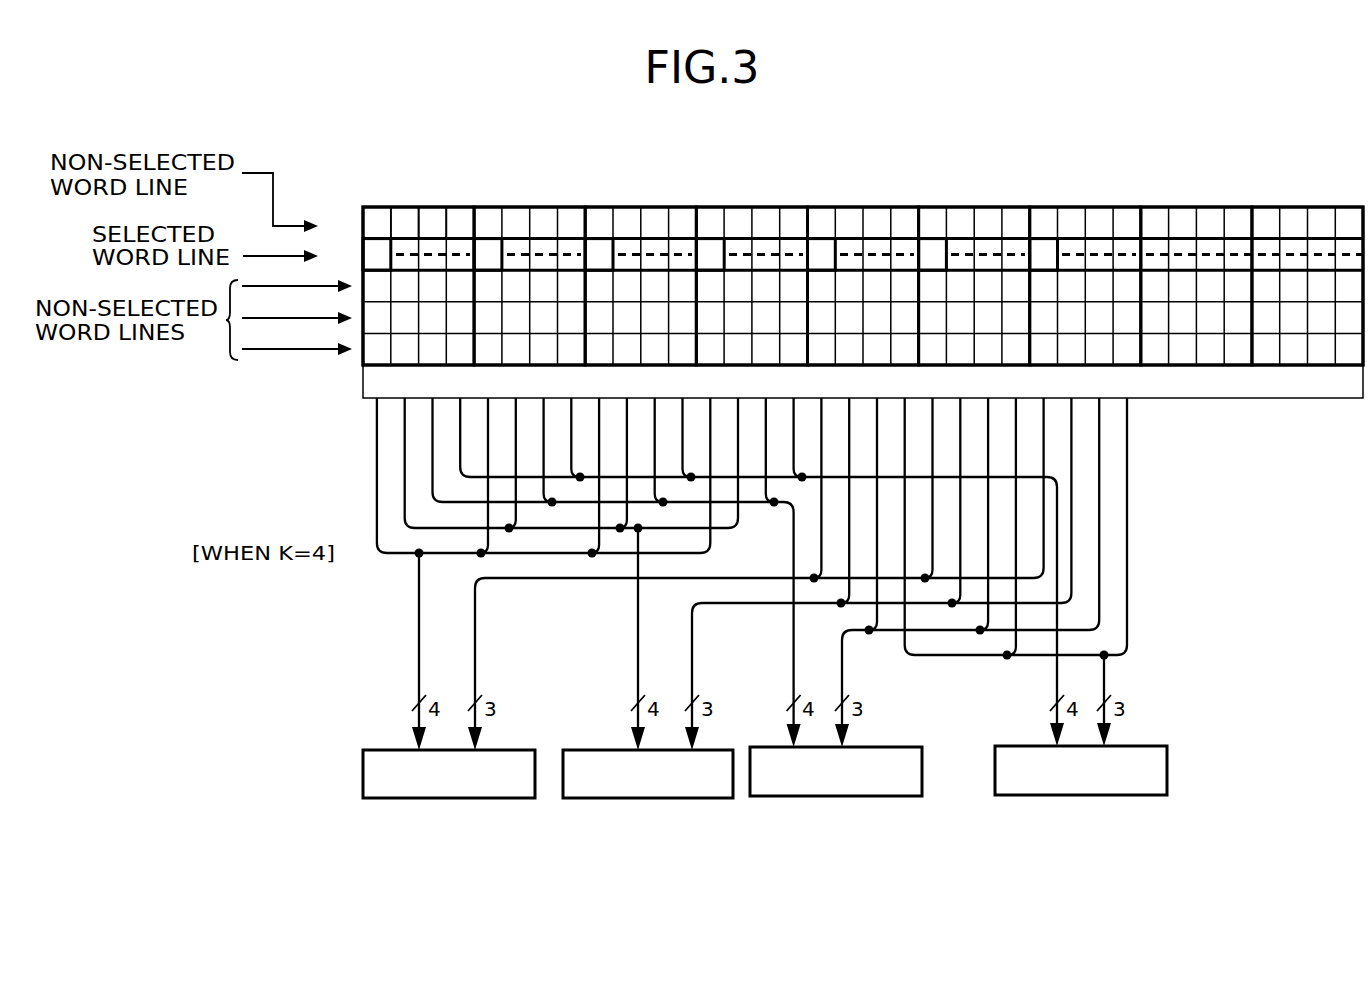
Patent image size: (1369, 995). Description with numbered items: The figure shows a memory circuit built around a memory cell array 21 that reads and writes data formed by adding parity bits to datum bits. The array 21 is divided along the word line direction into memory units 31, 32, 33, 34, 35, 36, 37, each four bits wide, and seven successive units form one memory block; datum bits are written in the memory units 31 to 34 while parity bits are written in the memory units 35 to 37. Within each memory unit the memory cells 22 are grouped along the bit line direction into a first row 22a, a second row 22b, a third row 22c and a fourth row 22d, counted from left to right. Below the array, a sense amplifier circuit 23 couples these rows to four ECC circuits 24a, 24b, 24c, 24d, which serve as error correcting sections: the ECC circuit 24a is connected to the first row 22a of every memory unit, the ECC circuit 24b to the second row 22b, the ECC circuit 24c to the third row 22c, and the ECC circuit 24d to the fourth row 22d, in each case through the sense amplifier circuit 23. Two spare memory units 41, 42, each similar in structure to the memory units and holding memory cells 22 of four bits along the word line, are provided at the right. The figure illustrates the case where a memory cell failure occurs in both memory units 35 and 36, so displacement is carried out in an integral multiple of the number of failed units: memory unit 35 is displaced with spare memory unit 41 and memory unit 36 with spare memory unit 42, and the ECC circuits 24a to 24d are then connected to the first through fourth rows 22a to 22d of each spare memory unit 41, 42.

The memory cell array 21 is at (938, 137).
The memory cell 22 is at (363, 259).
The first row 22a is at (377, 207).
The second row 22b is at (405, 207).
The third row 22c is at (434, 207).
The fourth row 22d is at (461, 207).
The sense amplifier circuit 23 is at (363, 385).
The ECC circuit 24a is at (449, 798).
The ECC circuit 24b is at (648, 798).
The ECC circuit 24c is at (836, 796).
The ECC circuit 24d is at (1081, 795).
The memory unit 31 is at (363, 211).
The memory unit 32 is at (548, 207).
The memory unit 33 is at (657, 207).
The memory unit 34 is at (767, 207).
The memory unit 35 is at (877, 207).
The memory unit 36 is at (988, 207).
The memory unit 37 is at (1099, 207).
The spare memory unit 41 is at (1209, 207).
The spare memory unit 42 is at (1321, 207).